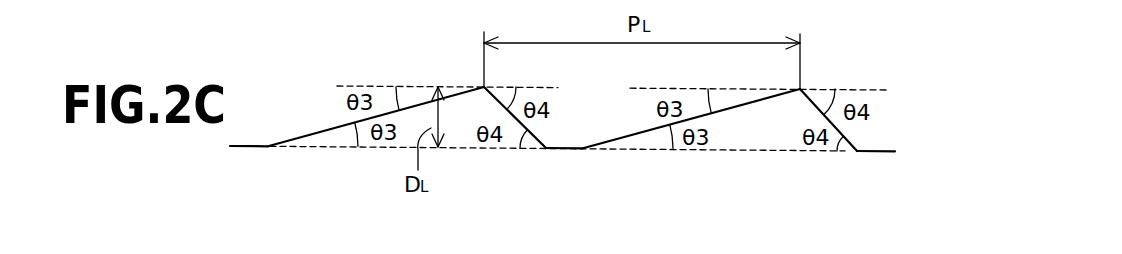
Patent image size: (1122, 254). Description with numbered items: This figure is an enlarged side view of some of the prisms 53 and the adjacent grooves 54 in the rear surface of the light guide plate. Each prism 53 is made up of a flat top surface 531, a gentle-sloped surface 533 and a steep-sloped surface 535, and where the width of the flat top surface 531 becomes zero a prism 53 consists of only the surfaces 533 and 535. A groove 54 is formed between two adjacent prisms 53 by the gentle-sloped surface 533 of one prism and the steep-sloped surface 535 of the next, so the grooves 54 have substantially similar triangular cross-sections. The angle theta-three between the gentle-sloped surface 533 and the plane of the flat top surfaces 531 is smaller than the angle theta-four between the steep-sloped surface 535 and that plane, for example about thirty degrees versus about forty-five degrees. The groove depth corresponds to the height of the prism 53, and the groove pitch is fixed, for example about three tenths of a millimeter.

The prism 53 is at (605, 93).
The groove 54 is at (460, 140).
The flat top surface 531 is at (236, 147).
The gentle-sloped surface 533 is at (304, 147).
The steep-sloped surface 535 is at (536, 143).